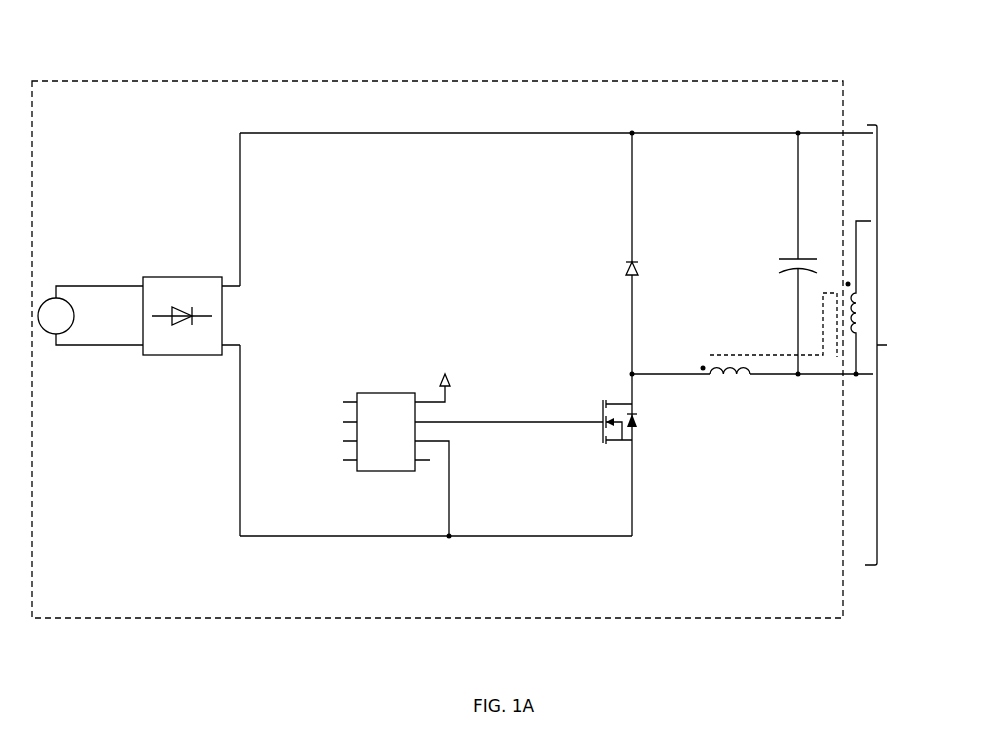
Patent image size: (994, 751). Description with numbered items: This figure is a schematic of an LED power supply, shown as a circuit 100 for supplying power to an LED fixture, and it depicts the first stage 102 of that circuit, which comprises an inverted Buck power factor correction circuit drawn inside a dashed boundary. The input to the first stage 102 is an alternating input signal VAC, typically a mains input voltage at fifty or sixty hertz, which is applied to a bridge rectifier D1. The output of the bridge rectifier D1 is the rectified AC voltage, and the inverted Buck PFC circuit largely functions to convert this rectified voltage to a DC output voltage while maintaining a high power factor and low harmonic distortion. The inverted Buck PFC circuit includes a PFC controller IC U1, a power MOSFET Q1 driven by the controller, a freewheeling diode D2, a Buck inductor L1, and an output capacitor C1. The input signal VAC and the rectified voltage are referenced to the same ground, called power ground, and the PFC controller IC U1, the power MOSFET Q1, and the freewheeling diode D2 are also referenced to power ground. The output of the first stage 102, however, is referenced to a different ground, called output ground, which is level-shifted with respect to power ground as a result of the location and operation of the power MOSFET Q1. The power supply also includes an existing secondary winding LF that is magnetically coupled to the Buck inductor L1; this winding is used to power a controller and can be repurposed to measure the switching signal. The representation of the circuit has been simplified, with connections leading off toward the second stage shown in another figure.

The circuit 100 is at (203, 65).
The first stage 102 is at (303, 80).
The alternating input signal VAC is at (90, 315).
The bridge rectifier D1 is at (191, 310).
The freewheeling diode D2 is at (641, 268).
The PFC controller IC U1 is at (473, 455).
The power MOSFET Q1 is at (630, 422).
The Buck inductor L1 is at (725, 377).
The output capacitor C1 is at (793, 253).
The secondary winding LF is at (859, 297).